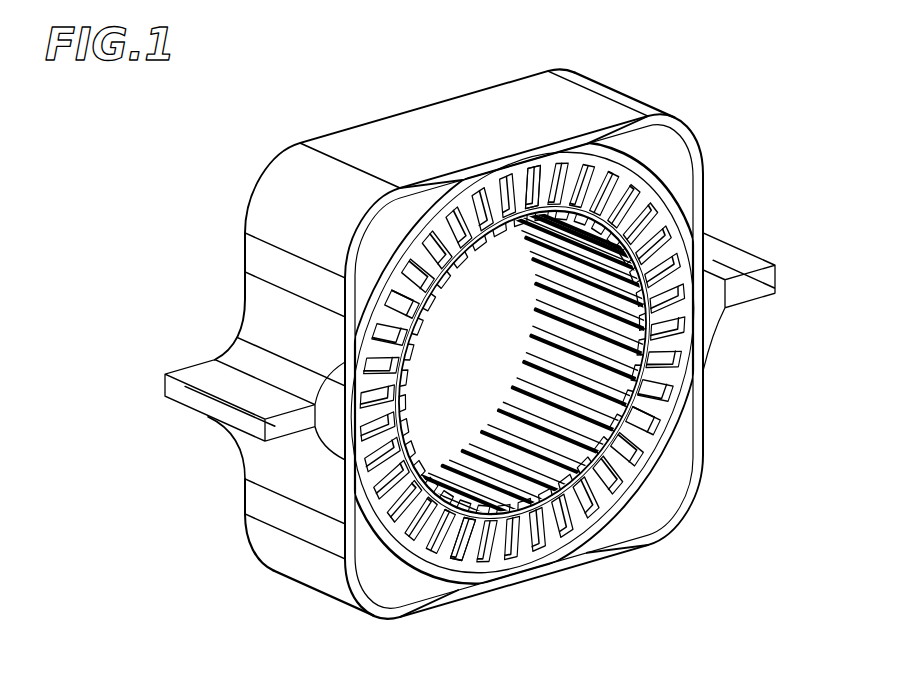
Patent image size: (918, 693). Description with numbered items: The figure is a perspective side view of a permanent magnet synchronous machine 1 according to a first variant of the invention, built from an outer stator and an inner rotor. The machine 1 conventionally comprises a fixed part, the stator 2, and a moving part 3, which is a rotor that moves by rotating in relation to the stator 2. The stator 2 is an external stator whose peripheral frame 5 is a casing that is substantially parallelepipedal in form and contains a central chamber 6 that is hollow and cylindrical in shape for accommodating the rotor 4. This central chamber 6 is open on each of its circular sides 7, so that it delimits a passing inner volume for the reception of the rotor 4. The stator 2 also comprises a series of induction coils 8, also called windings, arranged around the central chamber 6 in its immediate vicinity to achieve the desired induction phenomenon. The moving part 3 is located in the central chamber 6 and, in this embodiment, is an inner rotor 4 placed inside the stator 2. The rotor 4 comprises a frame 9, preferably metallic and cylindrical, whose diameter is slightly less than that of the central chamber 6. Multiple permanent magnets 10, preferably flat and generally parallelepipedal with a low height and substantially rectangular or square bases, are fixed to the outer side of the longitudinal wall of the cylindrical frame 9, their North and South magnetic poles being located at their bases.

The permanent magnet synchronous machine 1 is at (136, 150).
The stator 2 is at (682, 106).
The moving part 3 is at (585, 401).
The rotor 4 is at (585, 401).
The peripheral frame 5 is at (697, 378).
The central chamber 6 is at (487, 322).
The circular sides 7 is at (437, 413).
The induction coils 8 is at (510, 183).
The frame 9 is at (600, 478).
The permanent magnets 10 is at (536, 176).